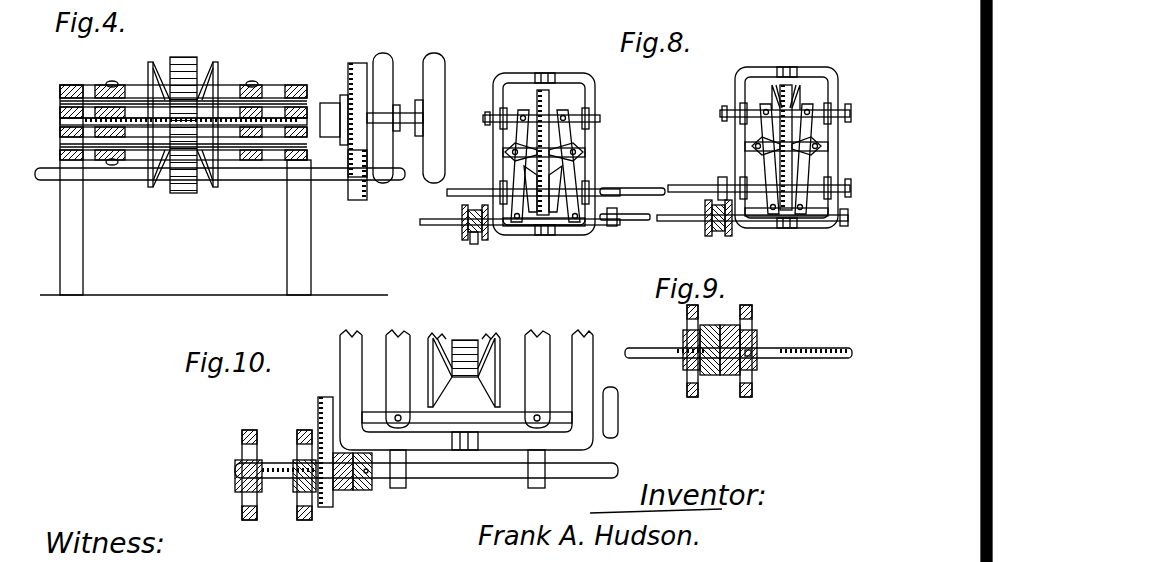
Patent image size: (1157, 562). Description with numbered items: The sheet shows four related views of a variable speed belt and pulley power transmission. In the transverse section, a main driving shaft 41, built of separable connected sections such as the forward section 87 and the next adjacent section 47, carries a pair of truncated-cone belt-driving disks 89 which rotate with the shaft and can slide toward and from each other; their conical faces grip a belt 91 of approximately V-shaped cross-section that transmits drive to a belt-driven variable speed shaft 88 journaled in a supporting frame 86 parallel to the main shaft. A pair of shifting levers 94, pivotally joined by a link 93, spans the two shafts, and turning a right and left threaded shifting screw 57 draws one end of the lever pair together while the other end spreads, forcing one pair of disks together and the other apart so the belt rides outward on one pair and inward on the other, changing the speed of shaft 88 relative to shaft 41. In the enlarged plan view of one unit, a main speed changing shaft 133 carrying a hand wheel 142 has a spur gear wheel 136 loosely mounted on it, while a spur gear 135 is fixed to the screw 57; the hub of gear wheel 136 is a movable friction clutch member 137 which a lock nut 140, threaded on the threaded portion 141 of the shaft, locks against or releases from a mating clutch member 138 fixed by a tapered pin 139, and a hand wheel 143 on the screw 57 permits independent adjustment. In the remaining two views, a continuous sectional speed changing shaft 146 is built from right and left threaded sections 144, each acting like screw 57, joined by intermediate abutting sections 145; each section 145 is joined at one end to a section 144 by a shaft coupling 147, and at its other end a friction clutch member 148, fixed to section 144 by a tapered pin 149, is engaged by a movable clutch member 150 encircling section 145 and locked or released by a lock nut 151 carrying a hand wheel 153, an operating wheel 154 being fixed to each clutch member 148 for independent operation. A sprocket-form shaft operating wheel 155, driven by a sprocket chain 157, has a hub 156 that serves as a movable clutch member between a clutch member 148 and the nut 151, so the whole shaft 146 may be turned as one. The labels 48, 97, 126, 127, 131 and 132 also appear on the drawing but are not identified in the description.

In FIG. 8, the main driving shaft 41 is at (684, 186).
In FIG. 8, the shaft section 47 is at (722, 180).
In FIG. 8, the lever arm 48 is at (598, 152).
In FIG. 4, the shifting screw 57 is at (62, 124).
In FIG. 10, the shifting screw 57 is at (505, 412).
In FIG. 8, the supporting frame 86 is at (545, 73).
In FIG. 10, the supporting frame 86 is at (586, 335).
In FIG. 8, the forward section 87 is at (650, 188).
In FIG. 8, the variable speed shaft 88 is at (582, 106).
In FIG. 4, the belt-driving disks 89 is at (151, 62).
In FIG. 10, the belt-driving disks 89 is at (438, 338).
In FIG. 4, the belt 91 is at (186, 57).
In FIG. 10, the belt 91 is at (465, 358).
In FIG. 4, the link 93 is at (112, 82).
In FIG. 4, the shifting levers 94 is at (120, 85).
In FIG. 10, the shifting levers 94 is at (398, 340).
In FIG. 4, the shaft 97 is at (345, 110).
In FIG. 4, the sprocket wheel 126 is at (349, 70).
In FIG. 4, the sprocket wheel 127 is at (350, 185).
In FIG. 4, the wheel 131 is at (386, 60).
In FIG. 4, the wheel 132 is at (443, 60).
In FIG. 10, the main speed changing shaft 133 is at (498, 478).
In FIG. 10, the spur gear 135 is at (318, 400).
In FIG. 10, the spur gear wheel 136 is at (326, 507).
In FIG. 10, the movable friction clutch member 137 is at (342, 494).
In FIG. 10, the mating frictional clutch member 138 is at (358, 494).
In FIG. 10, the tapered pin 139 is at (372, 482).
In FIG. 10, the lock nut 140 is at (297, 492).
In FIG. 8, the screw threaded portion 141 is at (456, 189).
In FIG. 10, the screw threaded portion 141 is at (278, 464).
In FIG. 10, the hand wheel 142 is at (245, 450).
In FIG. 10, the hand wheel 143 is at (620, 422).
In FIG. 8, the right and left screw threaded sections 144 is at (545, 225).
In FIG. 9, the right and left screw threaded sections 144 is at (812, 348).
In FIG. 8, the intermediate shaft sections 145 is at (447, 223).
In FIG. 9, the intermediate shaft sections 145 is at (641, 348).
In FIG. 8, the sectional main speed changing shaft 146 is at (626, 233).
In FIG. 8, the shaft coupling 147 is at (610, 210).
In FIG. 8, the friction clutch member 148 is at (488, 228).
In FIG. 9, the friction clutch member 148 is at (757, 340).
In FIG. 9, the tapered pin 149 is at (752, 358).
In FIG. 8, the movable clutch member 150 is at (716, 236).
In FIG. 9, the movable clutch member 150 is at (722, 330).
In FIG. 8, the lock nut 151 is at (463, 238).
In FIG. 9, the lock nut 151 is at (686, 368).
In FIG. 9, the hand wheel 153 is at (692, 397).
In FIG. 9, the operating wheel 154 is at (746, 397).
In FIG. 8, the shaft operating wheel 155 is at (472, 240).
In FIG. 8, the hub 156 is at (462, 214).
In FIG. 9, the hub 156 is at (686, 345).
In FIG. 8, the sprocket chain 157 is at (478, 244).